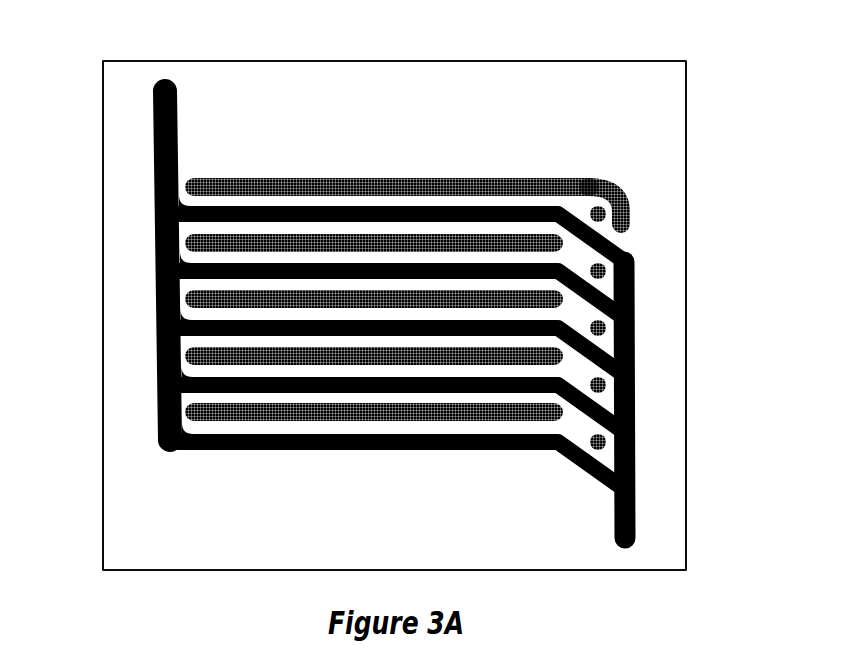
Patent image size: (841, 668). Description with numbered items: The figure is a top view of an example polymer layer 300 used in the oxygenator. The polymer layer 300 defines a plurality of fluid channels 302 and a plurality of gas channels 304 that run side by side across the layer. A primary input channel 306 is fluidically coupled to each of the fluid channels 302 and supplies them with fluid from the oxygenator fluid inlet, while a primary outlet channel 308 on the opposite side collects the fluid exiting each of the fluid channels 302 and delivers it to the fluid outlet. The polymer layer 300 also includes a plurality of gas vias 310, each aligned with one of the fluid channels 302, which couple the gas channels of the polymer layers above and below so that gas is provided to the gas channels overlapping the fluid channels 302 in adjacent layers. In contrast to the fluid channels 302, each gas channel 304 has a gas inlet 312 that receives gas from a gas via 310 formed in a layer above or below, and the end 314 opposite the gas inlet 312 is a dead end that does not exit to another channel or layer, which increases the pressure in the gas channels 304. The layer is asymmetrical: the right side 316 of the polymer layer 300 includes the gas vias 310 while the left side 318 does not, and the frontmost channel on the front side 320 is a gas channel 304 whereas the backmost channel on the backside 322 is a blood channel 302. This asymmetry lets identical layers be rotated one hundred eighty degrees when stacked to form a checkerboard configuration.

The polymer layer 300 is at (426, 36).
The fluid channels 302 is at (403, 448).
The gas channels 304 is at (409, 185).
The primary input channel 306 is at (636, 352).
The primary outlet channel 308 is at (163, 300).
The gas vias 310 is at (602, 272).
The gas inlet 312 is at (193, 415).
The end of the gas channels 314 is at (628, 226).
The right side 316 is at (688, 182).
The left side 318 is at (101, 203).
The front side 320 is at (551, 61).
The backside 322 is at (208, 572).